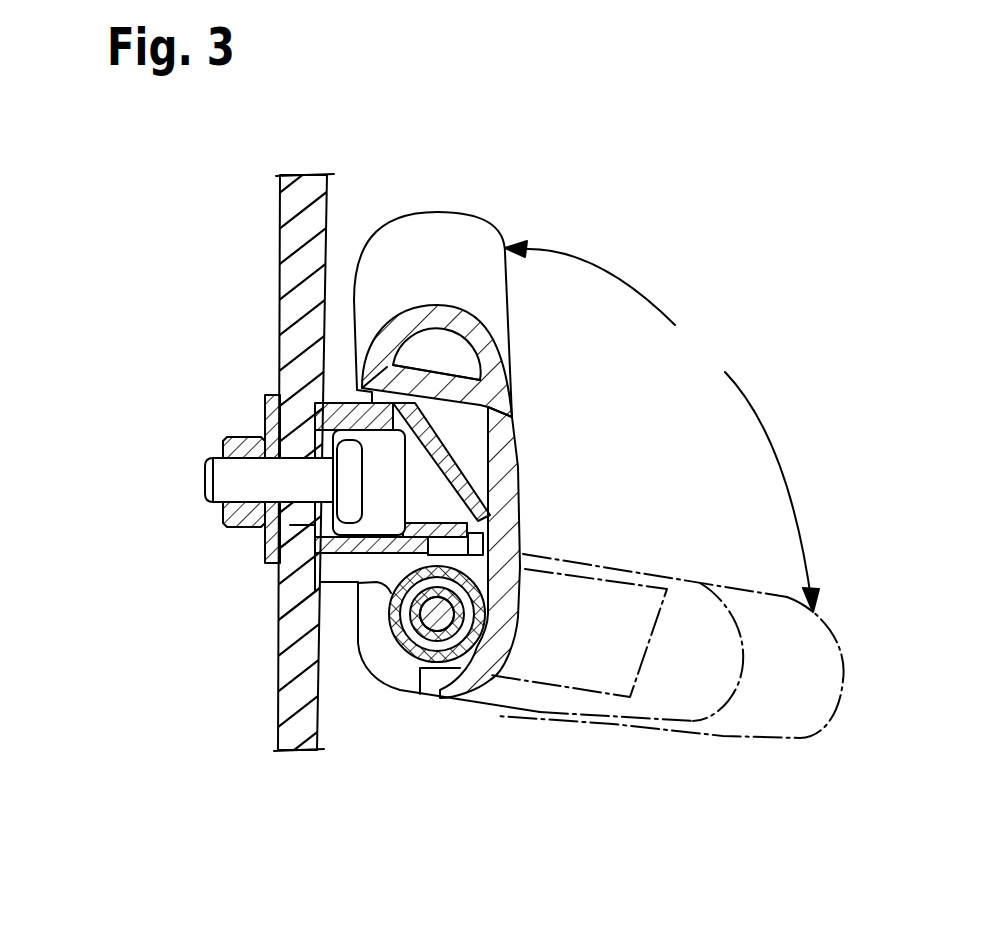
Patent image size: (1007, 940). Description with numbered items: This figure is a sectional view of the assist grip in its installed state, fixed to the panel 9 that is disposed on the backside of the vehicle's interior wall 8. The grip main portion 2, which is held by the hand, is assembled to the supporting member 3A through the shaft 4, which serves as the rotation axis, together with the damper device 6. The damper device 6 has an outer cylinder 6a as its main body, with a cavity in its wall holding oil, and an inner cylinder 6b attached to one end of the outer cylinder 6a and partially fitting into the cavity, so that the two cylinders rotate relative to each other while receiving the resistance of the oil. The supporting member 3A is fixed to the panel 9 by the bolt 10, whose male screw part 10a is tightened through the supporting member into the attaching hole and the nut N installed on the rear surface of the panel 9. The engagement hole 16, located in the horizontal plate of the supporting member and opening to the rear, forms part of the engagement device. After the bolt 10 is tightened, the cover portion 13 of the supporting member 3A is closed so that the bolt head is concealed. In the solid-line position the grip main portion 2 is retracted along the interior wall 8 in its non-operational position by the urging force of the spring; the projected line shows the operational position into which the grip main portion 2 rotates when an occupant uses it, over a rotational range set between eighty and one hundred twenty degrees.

The grip main portion 2 is at (489, 219).
The supporting member 3A is at (340, 566).
The shaft 4 is at (545, 567).
The damper device 6 is at (436, 686).
The outer cylinder 6a is at (387, 640).
The inner cylinder 6b is at (408, 660).
The interior wall 8 is at (298, 210).
The panel 9 is at (265, 404).
The bolt 10 is at (223, 480).
The male screw part 10a is at (369, 482).
The cover portion 13 is at (445, 460).
The engagement hole 16 is at (267, 548).
The nut N is at (222, 442).